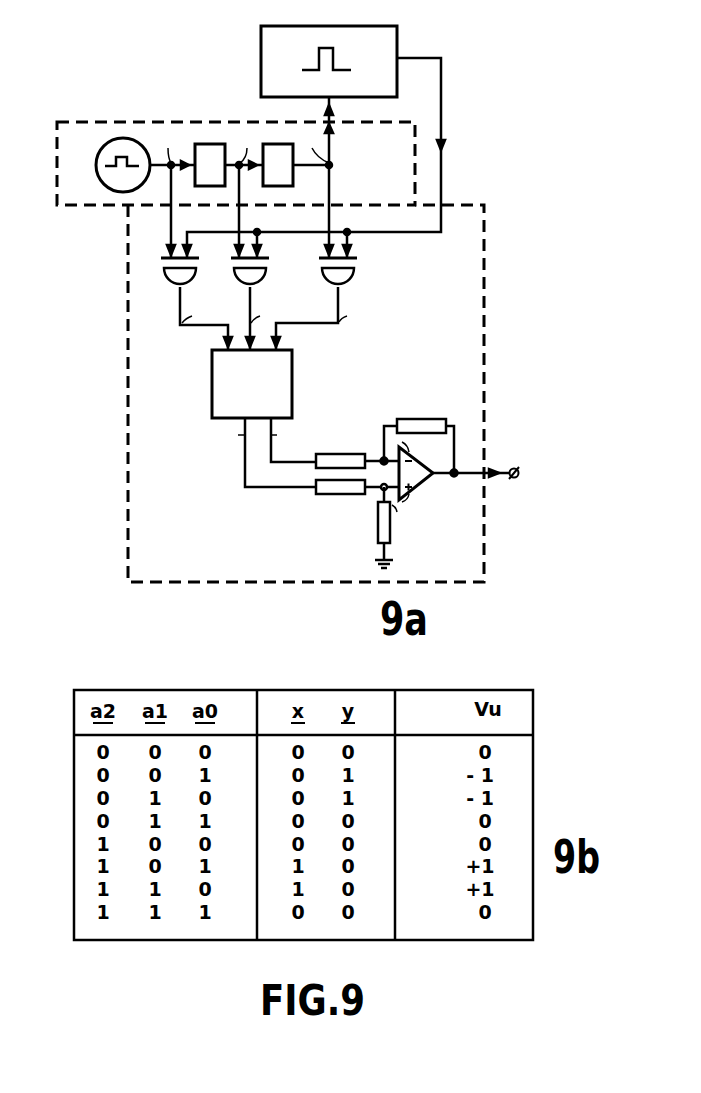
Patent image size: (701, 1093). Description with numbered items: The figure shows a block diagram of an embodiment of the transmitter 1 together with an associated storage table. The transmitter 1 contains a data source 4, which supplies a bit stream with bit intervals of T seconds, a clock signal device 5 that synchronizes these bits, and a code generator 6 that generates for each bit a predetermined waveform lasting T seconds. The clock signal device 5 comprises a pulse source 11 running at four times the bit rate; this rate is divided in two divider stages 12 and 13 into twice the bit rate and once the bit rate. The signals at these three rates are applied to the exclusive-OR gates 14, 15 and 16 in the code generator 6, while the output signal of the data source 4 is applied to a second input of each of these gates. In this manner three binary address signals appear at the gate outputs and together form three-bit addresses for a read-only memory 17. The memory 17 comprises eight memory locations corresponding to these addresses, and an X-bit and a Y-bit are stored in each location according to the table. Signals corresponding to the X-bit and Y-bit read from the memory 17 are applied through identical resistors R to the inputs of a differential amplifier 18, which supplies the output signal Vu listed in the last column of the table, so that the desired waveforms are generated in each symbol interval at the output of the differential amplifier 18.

The transmitter 1 is at (233, 25).
The data source 4 is at (398, 51).
The clock signal device 5 is at (176, 119).
The code generator 6 is at (485, 277).
The pulse source 11 is at (104, 182).
The divider stage 12 is at (202, 186).
The divider stage 13 is at (290, 186).
The exclusive-OR gate 14 is at (164, 282).
The exclusive-OR gate 15 is at (235, 282).
The exclusive-OR gate 16 is at (322, 282).
The ROM memory 17 is at (292, 389).
The differential amplifier 18 is at (452, 529).